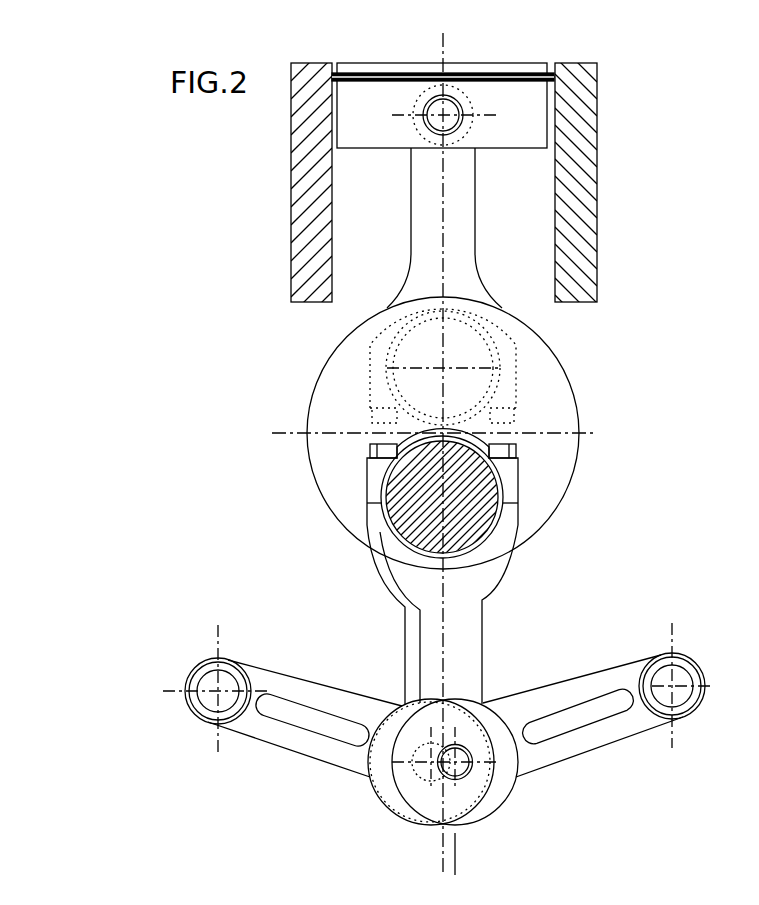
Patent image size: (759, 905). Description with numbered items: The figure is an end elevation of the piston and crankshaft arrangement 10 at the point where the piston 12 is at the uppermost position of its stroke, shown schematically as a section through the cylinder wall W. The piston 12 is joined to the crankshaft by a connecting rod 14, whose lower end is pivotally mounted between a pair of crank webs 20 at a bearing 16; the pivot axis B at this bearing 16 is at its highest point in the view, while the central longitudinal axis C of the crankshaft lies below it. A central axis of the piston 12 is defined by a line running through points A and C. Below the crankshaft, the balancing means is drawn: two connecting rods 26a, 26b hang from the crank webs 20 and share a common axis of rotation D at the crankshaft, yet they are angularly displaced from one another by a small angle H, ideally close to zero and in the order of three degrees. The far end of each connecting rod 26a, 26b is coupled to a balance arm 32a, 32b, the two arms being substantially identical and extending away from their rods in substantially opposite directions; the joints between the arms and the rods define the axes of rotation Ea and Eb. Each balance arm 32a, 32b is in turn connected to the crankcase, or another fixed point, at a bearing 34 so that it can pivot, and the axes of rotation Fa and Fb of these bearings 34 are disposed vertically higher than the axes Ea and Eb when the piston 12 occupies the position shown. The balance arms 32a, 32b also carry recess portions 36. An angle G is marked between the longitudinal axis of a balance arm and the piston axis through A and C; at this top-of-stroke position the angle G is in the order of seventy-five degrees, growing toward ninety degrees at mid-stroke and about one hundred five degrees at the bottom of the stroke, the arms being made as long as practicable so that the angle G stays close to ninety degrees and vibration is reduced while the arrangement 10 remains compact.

The piston and crankshaft arrangement 10 is at (587, 393).
The piston 12 is at (370, 98).
The connecting rod 14 is at (432, 268).
The bearing 16 is at (497, 368).
The crank webs 20 is at (560, 475).
The connecting rod of balancing means 26a is at (412, 657).
The connecting rod of balancing means 26b is at (463, 657).
The balance arm 32a is at (302, 748).
The balance arm 32b is at (560, 750).
The bearing 34 is at (195, 727).
The recess portions 36 is at (277, 700).
The point A is at (441, 113).
The pivot axis B is at (440, 366).
The central longitudinal axis C is at (438, 427).
The axis of rotation D is at (440, 499).
The axis of rotation Ea is at (429, 766).
The axis of rotation Eb is at (457, 767).
The axis of rotation Fa is at (217, 690).
The axis of rotation Fb is at (673, 688).
The angle G is at (540, 725).
The angle H is at (400, 871).
The cylinder wall W is at (305, 195).